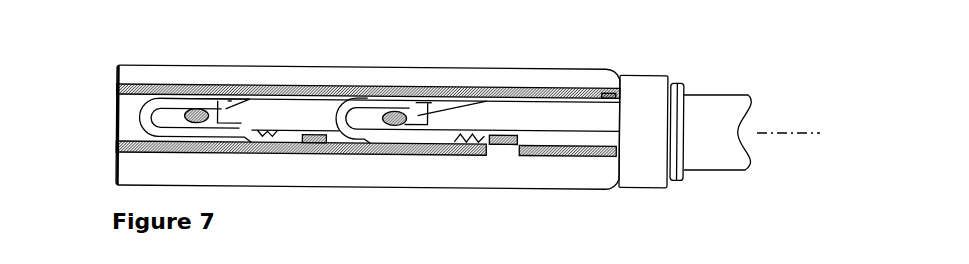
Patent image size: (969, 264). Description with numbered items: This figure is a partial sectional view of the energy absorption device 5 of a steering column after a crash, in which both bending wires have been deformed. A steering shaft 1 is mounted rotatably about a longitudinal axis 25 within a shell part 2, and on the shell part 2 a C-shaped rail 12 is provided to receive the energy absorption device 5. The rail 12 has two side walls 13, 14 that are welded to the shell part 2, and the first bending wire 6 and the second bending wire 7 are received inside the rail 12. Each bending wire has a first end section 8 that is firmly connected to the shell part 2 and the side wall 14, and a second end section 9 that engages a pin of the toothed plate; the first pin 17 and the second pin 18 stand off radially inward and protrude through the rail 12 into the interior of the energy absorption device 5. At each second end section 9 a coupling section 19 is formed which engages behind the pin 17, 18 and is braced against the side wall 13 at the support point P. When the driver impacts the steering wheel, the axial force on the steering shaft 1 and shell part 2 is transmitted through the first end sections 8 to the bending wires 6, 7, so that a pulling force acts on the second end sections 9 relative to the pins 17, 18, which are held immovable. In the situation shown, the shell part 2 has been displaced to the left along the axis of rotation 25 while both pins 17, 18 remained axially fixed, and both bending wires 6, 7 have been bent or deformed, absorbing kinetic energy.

The steering shaft 1 is at (717, 115).
The shell part 2 is at (602, 78).
The energy absorption device 5 is at (127, 110).
The first bending wire 6 is at (443, 138).
The second bending wire 7 is at (245, 140).
The first end section 8 is at (278, 130).
The second end section 9 is at (197, 103).
The C-shaped rail 12 is at (152, 84).
The side wall 13 is at (360, 105).
The side wall 14 is at (345, 142).
The first pin 17 is at (410, 104).
The second pin 18 is at (212, 108).
The coupling section 19 is at (242, 103).
The longitudinal axis 25 is at (807, 133).
The support point P is at (230, 100).